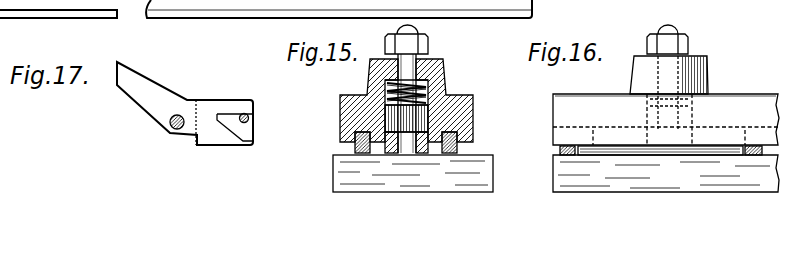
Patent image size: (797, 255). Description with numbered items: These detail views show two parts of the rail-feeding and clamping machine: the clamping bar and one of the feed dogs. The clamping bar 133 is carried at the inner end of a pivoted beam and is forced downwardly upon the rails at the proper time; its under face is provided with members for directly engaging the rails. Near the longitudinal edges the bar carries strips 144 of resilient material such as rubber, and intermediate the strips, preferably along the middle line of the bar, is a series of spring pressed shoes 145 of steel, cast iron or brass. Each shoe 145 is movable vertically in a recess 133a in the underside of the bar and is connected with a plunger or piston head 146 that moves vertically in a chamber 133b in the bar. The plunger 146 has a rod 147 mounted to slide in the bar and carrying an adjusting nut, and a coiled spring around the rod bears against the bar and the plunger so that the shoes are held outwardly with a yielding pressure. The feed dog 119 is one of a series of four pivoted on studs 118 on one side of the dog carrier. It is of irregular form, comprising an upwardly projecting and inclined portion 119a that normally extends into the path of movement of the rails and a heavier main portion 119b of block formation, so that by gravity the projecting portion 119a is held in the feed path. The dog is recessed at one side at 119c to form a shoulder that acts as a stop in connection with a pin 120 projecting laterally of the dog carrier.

In FIG. 17, the stud 118 is at (177, 134).
In FIG. 17, the dog 119 is at (185, 103).
In FIG. 17, the upwardly projecting and inclined portion 119a is at (133, 72).
In FIG. 17, the main portion 119b is at (228, 144).
In FIG. 17, the recess 119c is at (248, 130).
In FIG. 17, the pin 120 is at (250, 118).
In FIG. 15, the clamping bar 133 is at (472, 97).
In FIG. 16, the clamping bar 133 is at (737, 96).
In FIG. 15, the recess 133a is at (342, 144).
In FIG. 16, the recess 133a is at (568, 151).
In FIG. 15, the chamber 133b is at (443, 80).
In FIG. 16, the chamber 133b is at (650, 87).
In FIG. 15, the strip 144 is at (349, 152).
In FIG. 16, the strip 144 is at (582, 156).
In FIG. 15, the spring pressed shoe 145 is at (417, 152).
In FIG. 16, the spring pressed shoe 145 is at (657, 150).
In FIG. 15, the plunger 146 is at (430, 117).
In FIG. 15, the rod 147 is at (419, 58).
In FIG. 16, the rod 147 is at (684, 52).